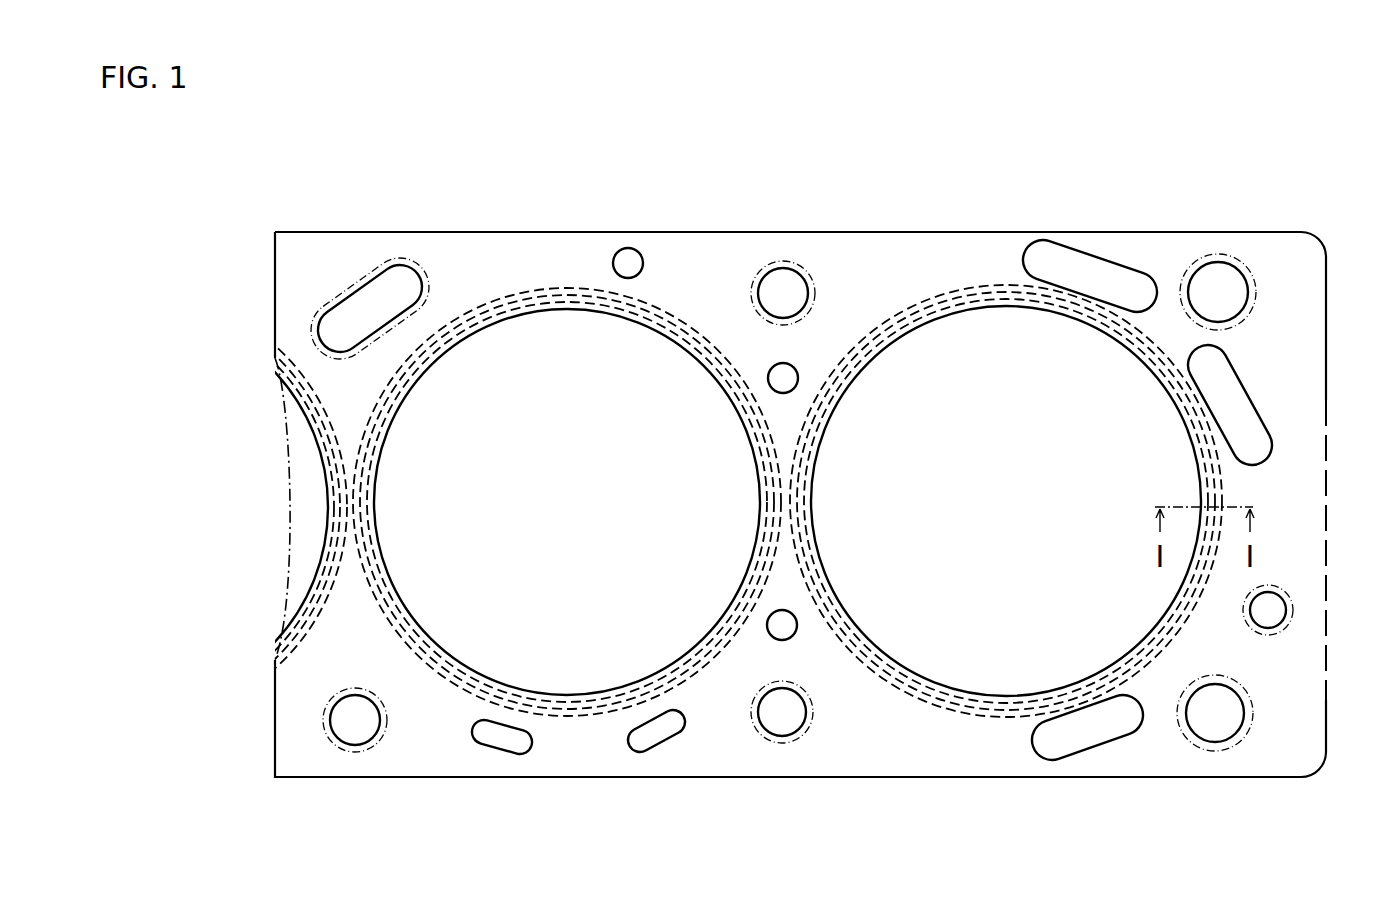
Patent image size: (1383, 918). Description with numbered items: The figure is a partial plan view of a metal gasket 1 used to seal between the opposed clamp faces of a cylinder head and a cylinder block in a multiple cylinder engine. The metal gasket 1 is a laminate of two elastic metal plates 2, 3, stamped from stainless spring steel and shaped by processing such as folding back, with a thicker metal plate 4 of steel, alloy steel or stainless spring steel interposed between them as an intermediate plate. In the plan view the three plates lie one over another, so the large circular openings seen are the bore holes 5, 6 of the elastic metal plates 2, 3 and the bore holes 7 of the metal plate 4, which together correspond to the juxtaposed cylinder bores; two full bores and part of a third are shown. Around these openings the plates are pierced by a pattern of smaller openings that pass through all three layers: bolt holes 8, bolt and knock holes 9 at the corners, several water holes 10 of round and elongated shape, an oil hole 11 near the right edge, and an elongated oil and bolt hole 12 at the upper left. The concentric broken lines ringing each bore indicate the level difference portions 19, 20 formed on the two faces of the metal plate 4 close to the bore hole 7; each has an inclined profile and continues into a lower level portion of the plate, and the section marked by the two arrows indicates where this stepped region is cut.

The metal gasket 1 is at (1035, 232).
The elastic metal plate 2 is at (800, 480).
The elastic metal plate 3 is at (800, 480).
The metal plate 4 is at (877, 255).
The bore hole 5 is at (600, 505).
The bore hole 6 is at (600, 505).
The bore hole 7 is at (585, 310).
The bolt hole 8 is at (785, 270).
The bolt and knock hole 9 is at (1219, 262).
The water hole 10 is at (628, 250).
The oil hole 11 is at (1286, 606).
The oil and bolt hole 12 is at (388, 272).
The level difference portion 19 is at (611, 504).
The level difference portion 20 is at (762, 478).